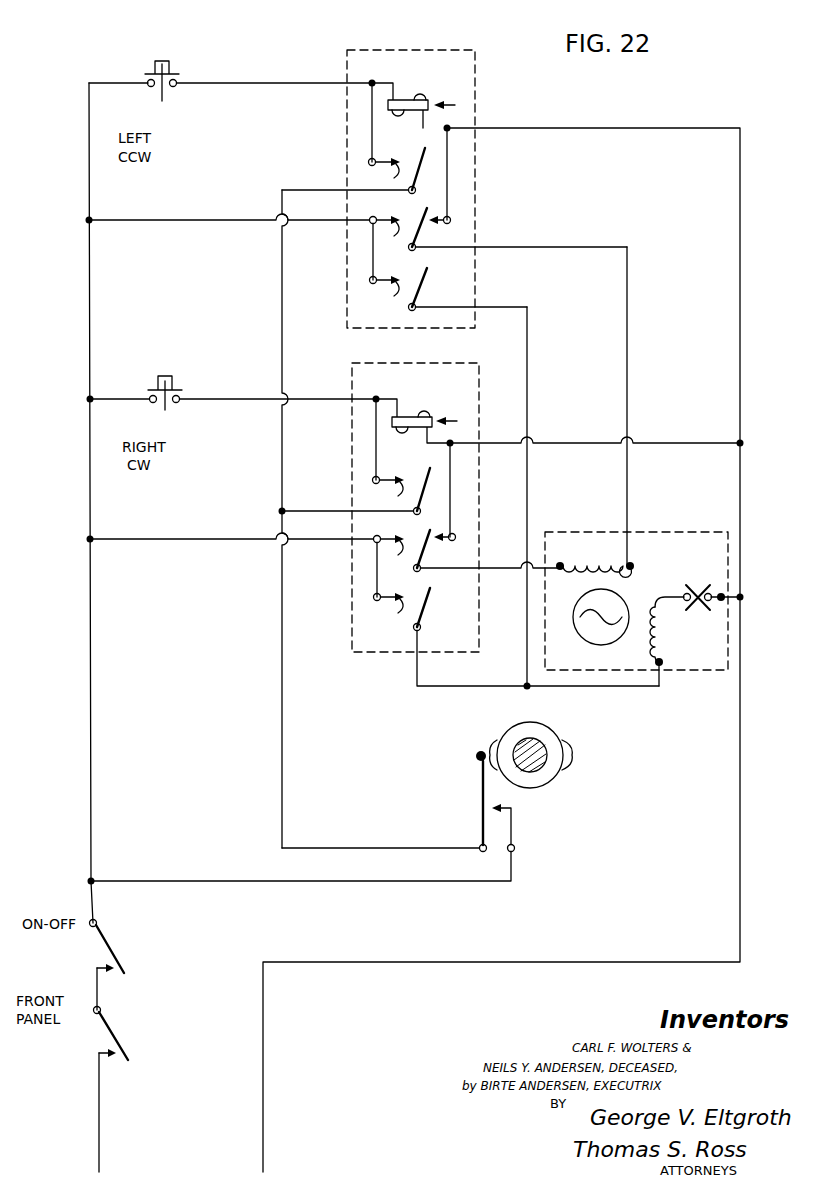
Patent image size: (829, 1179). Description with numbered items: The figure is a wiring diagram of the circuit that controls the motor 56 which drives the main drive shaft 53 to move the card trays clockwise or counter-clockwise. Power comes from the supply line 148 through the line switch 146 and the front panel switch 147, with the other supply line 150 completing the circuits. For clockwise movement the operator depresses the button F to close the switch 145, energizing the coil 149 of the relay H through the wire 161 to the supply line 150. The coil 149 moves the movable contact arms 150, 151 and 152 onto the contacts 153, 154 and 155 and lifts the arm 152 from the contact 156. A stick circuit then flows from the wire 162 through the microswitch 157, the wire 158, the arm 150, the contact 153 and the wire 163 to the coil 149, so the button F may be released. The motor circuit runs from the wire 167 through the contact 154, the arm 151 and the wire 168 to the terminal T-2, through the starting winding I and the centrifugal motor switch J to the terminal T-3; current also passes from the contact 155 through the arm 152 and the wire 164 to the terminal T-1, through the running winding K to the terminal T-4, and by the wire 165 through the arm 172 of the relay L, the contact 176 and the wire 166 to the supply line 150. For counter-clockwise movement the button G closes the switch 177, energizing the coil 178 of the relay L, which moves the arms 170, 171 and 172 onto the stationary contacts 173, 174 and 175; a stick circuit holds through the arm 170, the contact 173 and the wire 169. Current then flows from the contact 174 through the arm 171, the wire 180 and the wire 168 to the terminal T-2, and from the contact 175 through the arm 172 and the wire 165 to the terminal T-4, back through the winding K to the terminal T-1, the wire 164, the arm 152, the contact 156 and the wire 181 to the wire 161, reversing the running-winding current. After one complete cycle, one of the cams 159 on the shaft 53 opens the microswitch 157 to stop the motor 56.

The switch 177 is at (168, 95).
The button G is at (166, 61).
The wire 169 is at (372, 124).
The coil 178 is at (424, 98).
The relay L is at (478, 84).
The stationary contact 173 is at (382, 173).
The movable contact arm 170 is at (421, 150).
The wire 166 is at (447, 172).
The contact 176 is at (434, 212).
The stationary contact 175 is at (249, 230).
The movable contact arm 172 is at (425, 236).
The stationary contact 174 is at (382, 265).
The movable contact arm 171 is at (424, 290).
The wire 180 is at (528, 362).
The wire 165 is at (628, 366).
The wire 161 is at (578, 443).
The switch 145 is at (172, 404).
The button F is at (168, 376).
The relay H is at (358, 652).
The wire 168 is at (382, 681).
The coil 149 is at (427, 414).
The wire 163 is at (376, 424).
The contact 153 is at (389, 491).
The supply line 150 is at (428, 480).
The wire 181 is at (451, 513).
The contact 156 is at (438, 538).
The movable contact arm 152 is at (428, 538).
The wire 167 is at (185, 541).
The contact 155 is at (394, 549).
The stationary contact 154 is at (394, 578).
The movable contact arm 151 is at (422, 608).
The wire 164 is at (468, 572).
The motor 56 is at (675, 532).
The running winding K is at (597, 564).
The motor terminal T-1 is at (552, 564).
The motor terminal T-4 is at (615, 562).
The centrifugal motor switch J is at (698, 592).
The starting winding I is at (648, 642).
The motor terminal T-3 is at (718, 602).
The motor terminal T-2 is at (664, 662).
The main drive shaft 53 is at (545, 745).
The cams 159 is at (496, 745).
The microswitch 157 is at (511, 828).
The wire 158 is at (282, 814).
The wire 162 is at (341, 881).
The line switch 146 is at (110, 956).
The front panel switch 147 is at (107, 1040).
The supply line 148 is at (99, 1112).